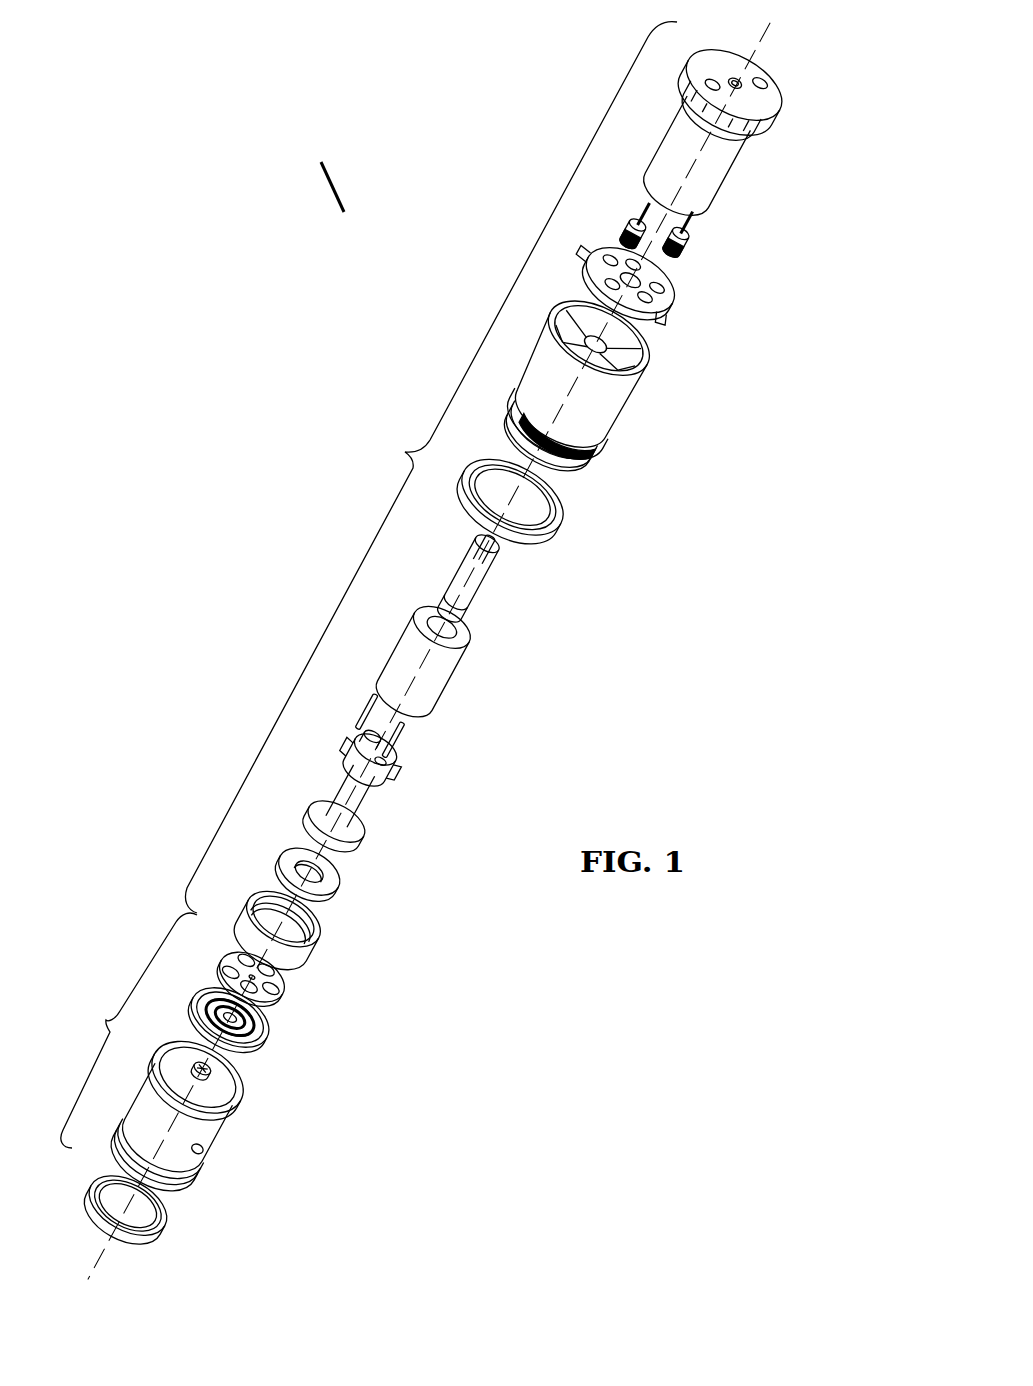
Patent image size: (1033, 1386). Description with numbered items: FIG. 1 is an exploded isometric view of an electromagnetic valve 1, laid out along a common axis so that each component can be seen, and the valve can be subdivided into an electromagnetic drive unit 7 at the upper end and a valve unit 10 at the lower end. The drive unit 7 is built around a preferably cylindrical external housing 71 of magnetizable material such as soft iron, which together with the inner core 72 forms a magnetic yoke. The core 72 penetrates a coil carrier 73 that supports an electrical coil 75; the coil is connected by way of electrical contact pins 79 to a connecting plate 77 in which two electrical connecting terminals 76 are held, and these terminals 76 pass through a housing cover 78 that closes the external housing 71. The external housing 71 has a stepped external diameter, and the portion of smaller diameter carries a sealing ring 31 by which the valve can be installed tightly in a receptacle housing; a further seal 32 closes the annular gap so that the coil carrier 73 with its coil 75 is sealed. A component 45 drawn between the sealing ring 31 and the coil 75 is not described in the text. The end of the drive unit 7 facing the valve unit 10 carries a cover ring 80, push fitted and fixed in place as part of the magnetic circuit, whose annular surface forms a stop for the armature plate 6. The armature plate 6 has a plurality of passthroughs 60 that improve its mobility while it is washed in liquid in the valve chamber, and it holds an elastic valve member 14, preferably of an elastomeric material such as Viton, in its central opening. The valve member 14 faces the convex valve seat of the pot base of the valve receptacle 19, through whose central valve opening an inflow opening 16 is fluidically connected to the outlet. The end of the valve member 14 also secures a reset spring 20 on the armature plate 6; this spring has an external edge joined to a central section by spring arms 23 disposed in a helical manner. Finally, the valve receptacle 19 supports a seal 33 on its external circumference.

The electromagnetic valve 1 is at (385, 277).
The electromagnetic drive unit 7 is at (403, 452).
The valve unit 10 is at (117, 1018).
The housing cover 78 is at (758, 100).
The inner core 72 is at (696, 175).
The electrical connecting terminals 76 is at (640, 228).
The connecting plate 77 is at (670, 290).
The external housing 71 is at (598, 395).
The sealing ring 31 is at (548, 525).
The drive shaft 45 is at (480, 580).
The electrical coil 75 is at (437, 672).
The electrical contact pins 79 is at (380, 712).
The coil carrier 73 is at (352, 800).
The further seal 32 is at (330, 880).
The cover ring 80 is at (315, 950).
The passthroughs 60 is at (287, 977).
The armature plate 6 is at (306, 990).
The reset spring 20 is at (274, 1038).
The spring arms 23 is at (248, 1047).
The valve member 14 is at (213, 1070).
The valve receptacle 19 is at (218, 1130).
The inflow opening 16 is at (200, 1150).
The seal 33 is at (160, 1230).